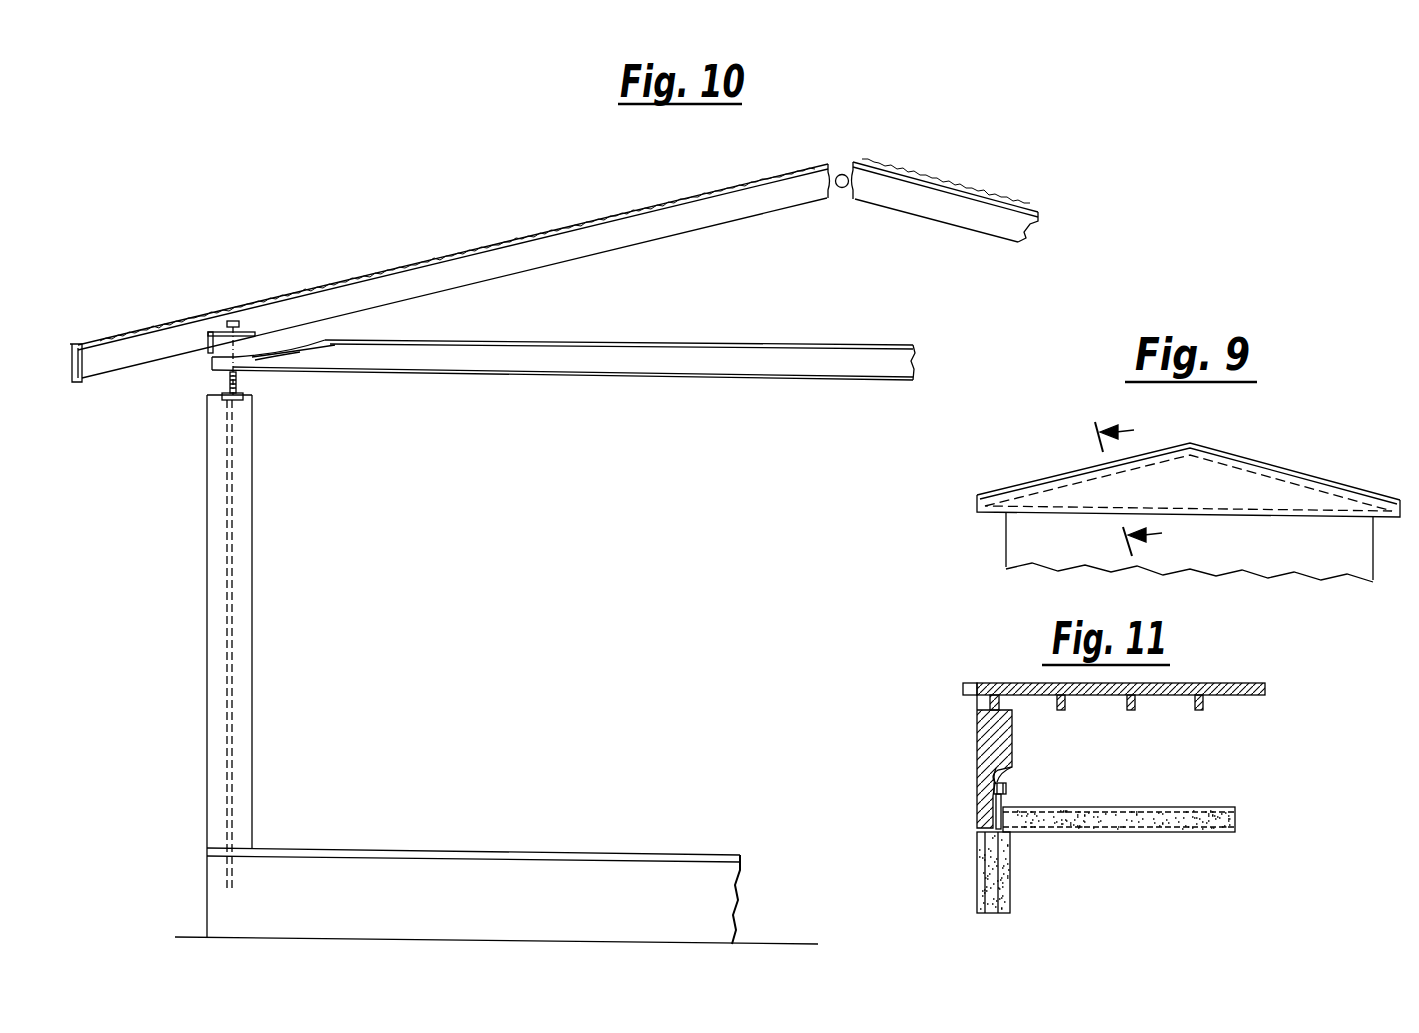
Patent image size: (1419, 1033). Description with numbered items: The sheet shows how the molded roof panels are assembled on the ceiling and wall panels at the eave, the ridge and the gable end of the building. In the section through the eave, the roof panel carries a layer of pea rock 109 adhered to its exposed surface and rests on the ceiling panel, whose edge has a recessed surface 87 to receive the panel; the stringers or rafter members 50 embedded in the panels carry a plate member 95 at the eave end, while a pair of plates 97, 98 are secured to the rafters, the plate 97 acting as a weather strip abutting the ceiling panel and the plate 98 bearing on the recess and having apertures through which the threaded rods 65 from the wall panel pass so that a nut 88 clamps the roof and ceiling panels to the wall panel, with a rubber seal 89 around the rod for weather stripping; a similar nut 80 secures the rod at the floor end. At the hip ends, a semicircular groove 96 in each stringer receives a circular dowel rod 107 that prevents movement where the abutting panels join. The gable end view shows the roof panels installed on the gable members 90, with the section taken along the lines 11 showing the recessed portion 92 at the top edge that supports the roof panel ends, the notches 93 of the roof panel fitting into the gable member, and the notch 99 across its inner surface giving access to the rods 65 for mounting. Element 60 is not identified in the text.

In FIG. 10, the pea rock 109 is at (536, 228).
In FIG. 10, the semicircular groove 96 is at (812, 168).
In FIG. 10, the circular dowel rod 107 is at (846, 174).
In FIG. 10, the plate member 95 is at (71, 368).
In FIG. 10, the plate 98 is at (248, 332).
In FIG. 10, the plate member 97 is at (209, 336).
In FIG. 10, the nut 88 is at (232, 321).
In FIG. 11, the nut 88 is at (1005, 790).
In FIG. 10, the recessed surface 87 is at (270, 352).
In FIG. 10, the stringers or rafter members 50 is at (790, 357).
In FIG. 10, the nut 80 is at (706, 345).
In FIG. 10, the beam bottom flange 60 is at (625, 380).
In FIG. 10, the rods 65 is at (240, 378).
In FIG. 11, the rods 65 is at (992, 812).
In FIG. 10, the rubber seal 89 is at (225, 394).
In FIG. 9, the notches 93 is at (975, 502).
In FIG. 11, the notches 93 is at (1011, 772).
In FIG. 9, the section lines 11— 11 is at (1144, 487).
In FIG. 11, the notch 99 is at (965, 692).
In FIG. 11, the recessed portion 92 is at (980, 712).
In FIG. 11, the gable members 90 is at (1022, 740).